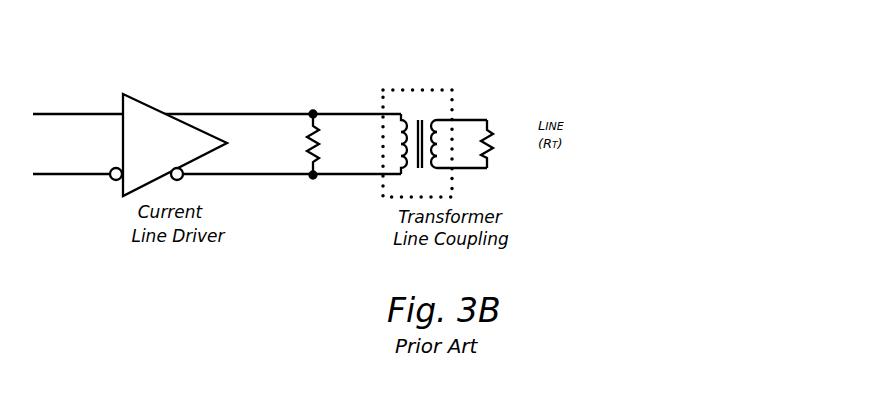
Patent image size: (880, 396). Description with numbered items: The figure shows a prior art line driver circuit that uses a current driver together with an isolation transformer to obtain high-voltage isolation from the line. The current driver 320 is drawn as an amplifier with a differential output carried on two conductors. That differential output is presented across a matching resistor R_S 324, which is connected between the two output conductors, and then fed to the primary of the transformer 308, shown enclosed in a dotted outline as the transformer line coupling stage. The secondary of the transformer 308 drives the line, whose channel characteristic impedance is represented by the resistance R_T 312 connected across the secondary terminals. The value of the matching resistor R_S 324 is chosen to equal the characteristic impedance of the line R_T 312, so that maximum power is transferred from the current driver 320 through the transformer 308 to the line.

The transformer 308 is at (435, 106).
The resistance R_T 312 is at (511, 120).
The current driver 320 is at (168, 145).
The matching resistor R_S 324 is at (325, 115).